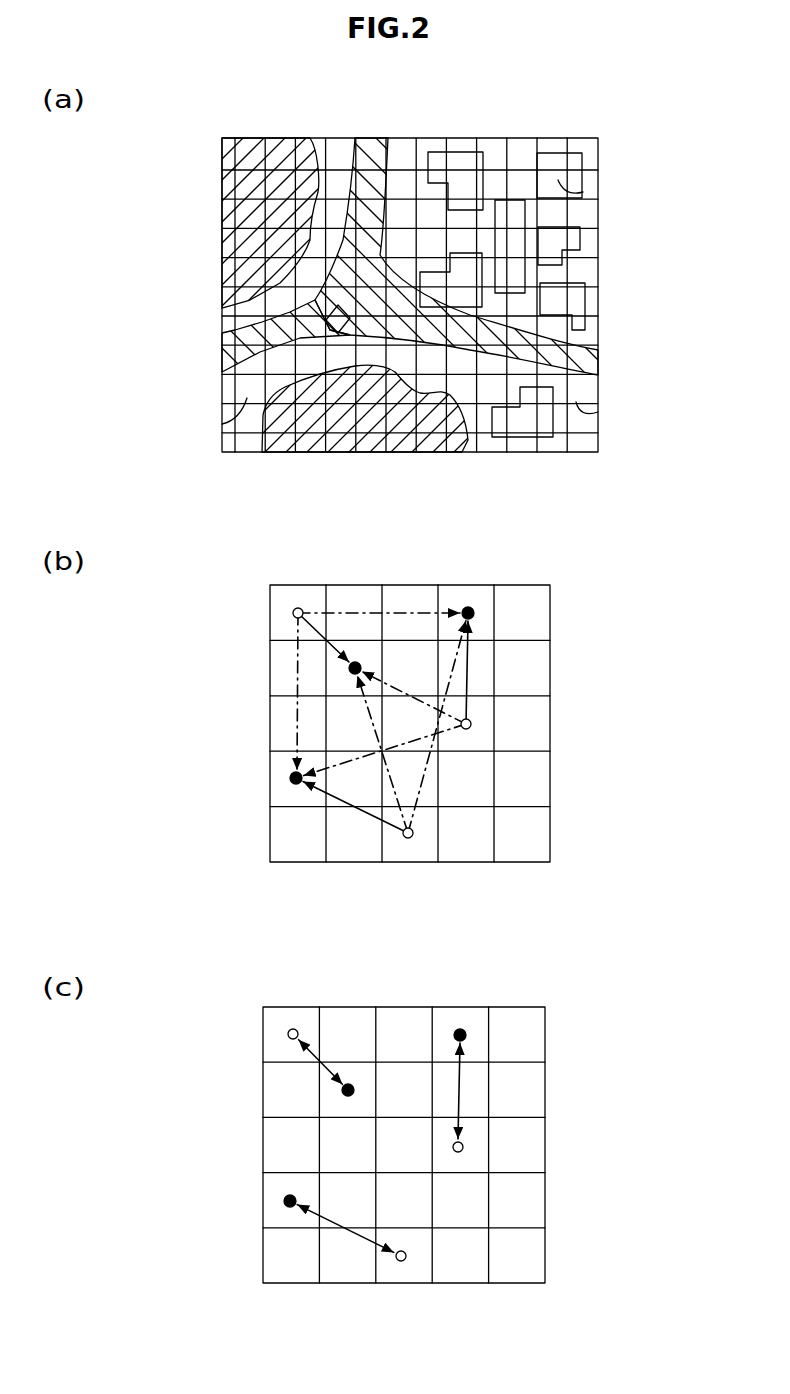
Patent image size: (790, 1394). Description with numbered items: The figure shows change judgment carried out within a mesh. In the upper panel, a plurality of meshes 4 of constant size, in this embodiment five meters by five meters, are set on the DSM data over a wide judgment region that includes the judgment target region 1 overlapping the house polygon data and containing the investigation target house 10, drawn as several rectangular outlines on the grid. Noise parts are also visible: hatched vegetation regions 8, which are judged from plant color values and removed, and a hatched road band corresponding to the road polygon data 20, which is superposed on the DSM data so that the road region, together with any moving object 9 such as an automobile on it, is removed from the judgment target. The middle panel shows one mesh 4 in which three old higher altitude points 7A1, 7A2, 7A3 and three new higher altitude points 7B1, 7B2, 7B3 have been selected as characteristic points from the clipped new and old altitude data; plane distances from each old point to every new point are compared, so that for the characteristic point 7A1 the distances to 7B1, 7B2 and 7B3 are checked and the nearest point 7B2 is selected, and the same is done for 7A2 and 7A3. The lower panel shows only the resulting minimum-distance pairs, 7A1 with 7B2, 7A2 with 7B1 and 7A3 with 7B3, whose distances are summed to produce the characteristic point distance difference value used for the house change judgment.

The mesh 4 is at (332, 150).
The vegetation region 8 is at (245, 213).
The moving object 9 is at (262, 333).
The road polygon data 20 is at (373, 150).
The judgment target region 1 is at (559, 255).
The investigation target house 10 is at (458, 152).
The old data characteristic point 7A1 is at (298, 606).
The old data characteristic point 7A2 is at (472, 724).
The old data characteristic point 7A3 is at (408, 840).
The new data characteristic point 7B1 is at (470, 606).
The new data characteristic point 7B2 is at (348, 668).
The new data characteristic point 7B3 is at (290, 778).